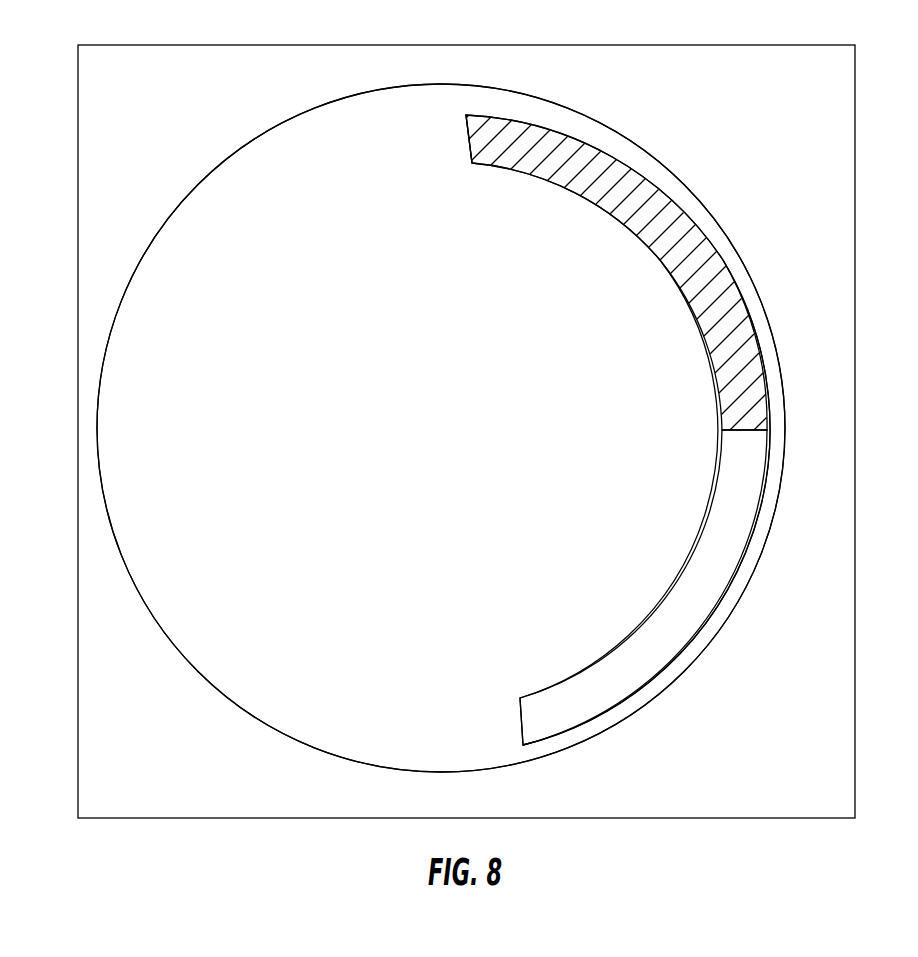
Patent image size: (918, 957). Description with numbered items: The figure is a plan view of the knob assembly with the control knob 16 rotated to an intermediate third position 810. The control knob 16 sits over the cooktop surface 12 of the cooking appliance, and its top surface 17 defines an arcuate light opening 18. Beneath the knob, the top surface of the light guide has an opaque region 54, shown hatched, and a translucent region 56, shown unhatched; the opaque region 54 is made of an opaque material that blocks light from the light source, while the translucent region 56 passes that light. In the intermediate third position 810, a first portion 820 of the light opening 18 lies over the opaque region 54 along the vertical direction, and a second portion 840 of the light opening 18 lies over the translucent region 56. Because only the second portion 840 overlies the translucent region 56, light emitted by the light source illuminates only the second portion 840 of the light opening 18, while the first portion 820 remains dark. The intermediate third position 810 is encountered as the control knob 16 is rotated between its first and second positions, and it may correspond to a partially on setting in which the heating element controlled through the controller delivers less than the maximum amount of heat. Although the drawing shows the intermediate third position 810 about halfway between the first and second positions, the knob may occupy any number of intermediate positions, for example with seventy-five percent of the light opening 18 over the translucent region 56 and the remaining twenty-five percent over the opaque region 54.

The intermediate third position 810 is at (455, 487).
The cooktop surface 12 is at (769, 746).
The control knob 16 is at (236, 716).
The top surface 17 is at (455, 566).
The light opening 18 is at (458, 148).
The opaque region 54 is at (628, 225).
The translucent region 56 is at (628, 660).
The first portion of light opening 820 is at (720, 240).
The second portion of light opening 840 is at (765, 485).